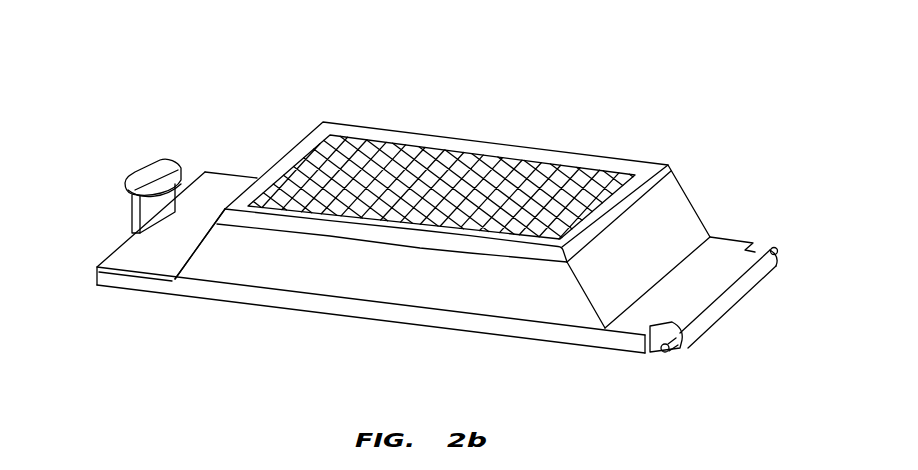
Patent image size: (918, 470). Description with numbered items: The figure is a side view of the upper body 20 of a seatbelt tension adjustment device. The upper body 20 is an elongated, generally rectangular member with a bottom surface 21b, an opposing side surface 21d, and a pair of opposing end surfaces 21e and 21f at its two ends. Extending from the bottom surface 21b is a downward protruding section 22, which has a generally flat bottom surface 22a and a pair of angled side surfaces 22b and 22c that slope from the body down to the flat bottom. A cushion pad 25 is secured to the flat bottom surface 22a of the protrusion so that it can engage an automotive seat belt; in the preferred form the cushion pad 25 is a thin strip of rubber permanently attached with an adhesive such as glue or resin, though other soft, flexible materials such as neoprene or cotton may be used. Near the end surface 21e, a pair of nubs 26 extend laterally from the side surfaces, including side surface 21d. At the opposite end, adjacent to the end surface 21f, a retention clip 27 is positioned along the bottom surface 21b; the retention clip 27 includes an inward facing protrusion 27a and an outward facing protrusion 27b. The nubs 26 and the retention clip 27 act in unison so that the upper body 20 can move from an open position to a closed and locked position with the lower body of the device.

The upper body 20 is at (215, 92).
The bottom surface 21b is at (225, 192).
The side surface 21d is at (332, 306).
The end surface 21e is at (742, 283).
The end surface 21f is at (115, 253).
The downward protruding section 22 is at (459, 285).
The flat bottom surface 22a is at (640, 164).
The angled side surface 22b is at (197, 244).
The angled side surface 22c is at (670, 210).
The cushion pad 25 is at (478, 158).
The nubs 26 is at (783, 250).
The retention clip 27 is at (128, 161).
The inward facing protrusion 27a is at (125, 188).
The outward facing protrusion 27b is at (180, 175).